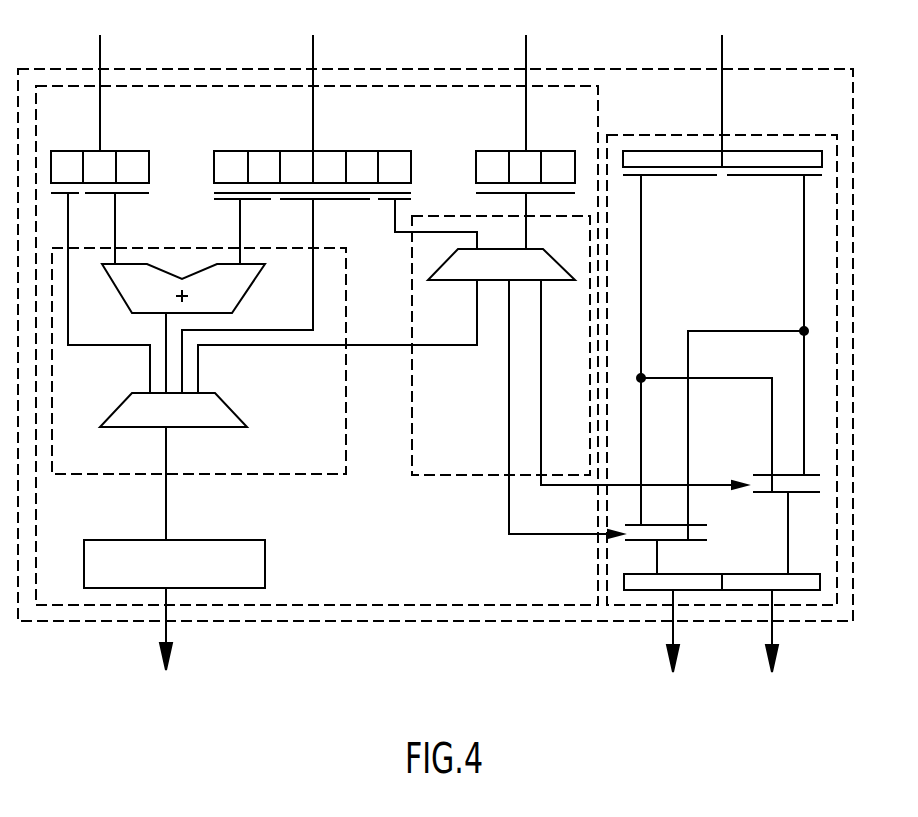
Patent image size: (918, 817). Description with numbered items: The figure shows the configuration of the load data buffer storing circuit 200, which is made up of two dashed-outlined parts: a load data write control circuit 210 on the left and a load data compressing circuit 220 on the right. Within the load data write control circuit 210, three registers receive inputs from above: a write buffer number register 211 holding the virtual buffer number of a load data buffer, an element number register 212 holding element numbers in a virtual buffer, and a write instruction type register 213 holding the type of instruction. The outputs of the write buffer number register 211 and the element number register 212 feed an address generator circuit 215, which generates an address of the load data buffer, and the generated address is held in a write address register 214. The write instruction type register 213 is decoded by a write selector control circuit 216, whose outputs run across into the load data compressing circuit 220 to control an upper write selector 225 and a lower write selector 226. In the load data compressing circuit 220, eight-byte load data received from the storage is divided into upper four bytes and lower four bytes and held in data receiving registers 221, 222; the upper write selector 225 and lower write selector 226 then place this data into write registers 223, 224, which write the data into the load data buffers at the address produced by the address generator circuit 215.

The load data buffer storing circuit 200 is at (595, 69).
The load data write control circuit 210 is at (312, 605).
The write buffer number register 211 is at (132, 151).
The element number register 212 is at (370, 151).
The write instruction type register 213 is at (537, 151).
The write address register 214 is at (221, 540).
The address generator circuit 215 is at (122, 475).
The write selector control circuit 216 is at (432, 475).
The load data compressing circuit 220 is at (797, 135).
The data receiving register 221 is at (665, 151).
The data receiving register 222 is at (770, 151).
The write register 223 is at (651, 574).
The write register 224 is at (768, 574).
The upper write selector 225 is at (697, 525).
The lower write selector 226 is at (793, 495).